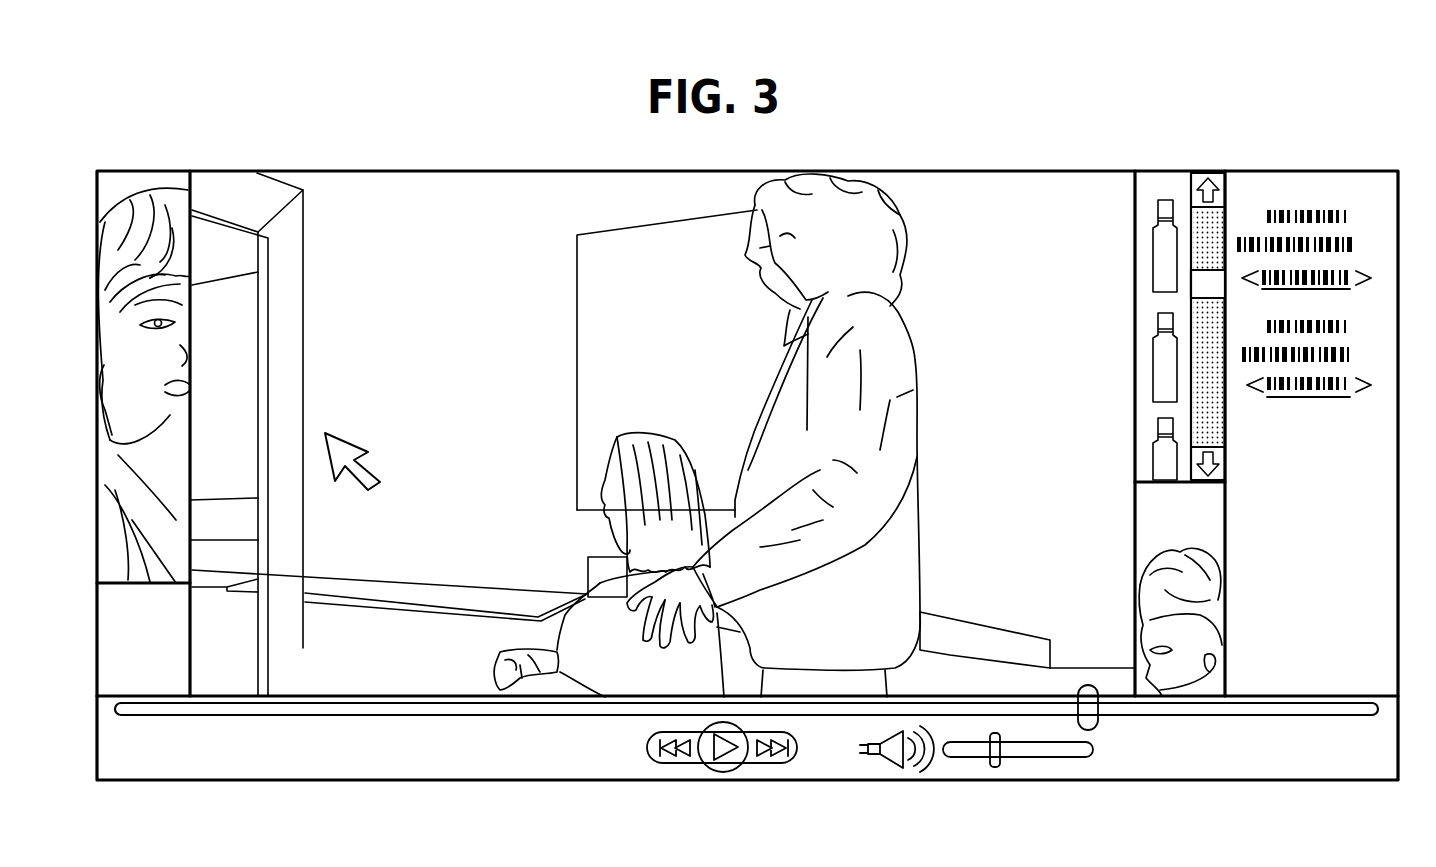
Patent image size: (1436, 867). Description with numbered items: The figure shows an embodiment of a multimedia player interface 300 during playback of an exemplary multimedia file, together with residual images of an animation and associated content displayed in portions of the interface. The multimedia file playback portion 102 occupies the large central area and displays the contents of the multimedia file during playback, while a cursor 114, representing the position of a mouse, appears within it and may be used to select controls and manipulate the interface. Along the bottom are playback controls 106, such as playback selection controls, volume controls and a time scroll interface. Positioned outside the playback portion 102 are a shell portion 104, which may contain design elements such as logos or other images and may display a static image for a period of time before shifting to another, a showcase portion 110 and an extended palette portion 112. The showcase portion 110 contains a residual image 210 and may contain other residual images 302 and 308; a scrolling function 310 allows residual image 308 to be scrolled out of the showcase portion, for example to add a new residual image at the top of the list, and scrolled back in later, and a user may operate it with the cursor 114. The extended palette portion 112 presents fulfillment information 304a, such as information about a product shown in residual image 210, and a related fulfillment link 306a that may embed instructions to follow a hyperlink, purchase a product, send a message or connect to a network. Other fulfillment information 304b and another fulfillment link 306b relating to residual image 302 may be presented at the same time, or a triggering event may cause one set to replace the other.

The multimedia player interface 300 is at (952, 132).
The multimedia file playback portion 102 is at (515, 196).
The shell portion 104 is at (152, 190).
The playback controls 106 is at (712, 765).
The showcase portion 110 is at (1130, 388).
The extended palette portion 112 is at (1336, 314).
The cursor 114 is at (366, 474).
The residual image 210 is at (1152, 248).
The residual image 302 is at (1150, 352).
The residual image 308 is at (1150, 427).
The fulfillment information 304a is at (1272, 197).
The fulfillment information 304b is at (1355, 325).
The fulfillment link 306a is at (1385, 270).
The fulfillment link 306b is at (1287, 400).
The scrolling function 310 is at (1230, 185).